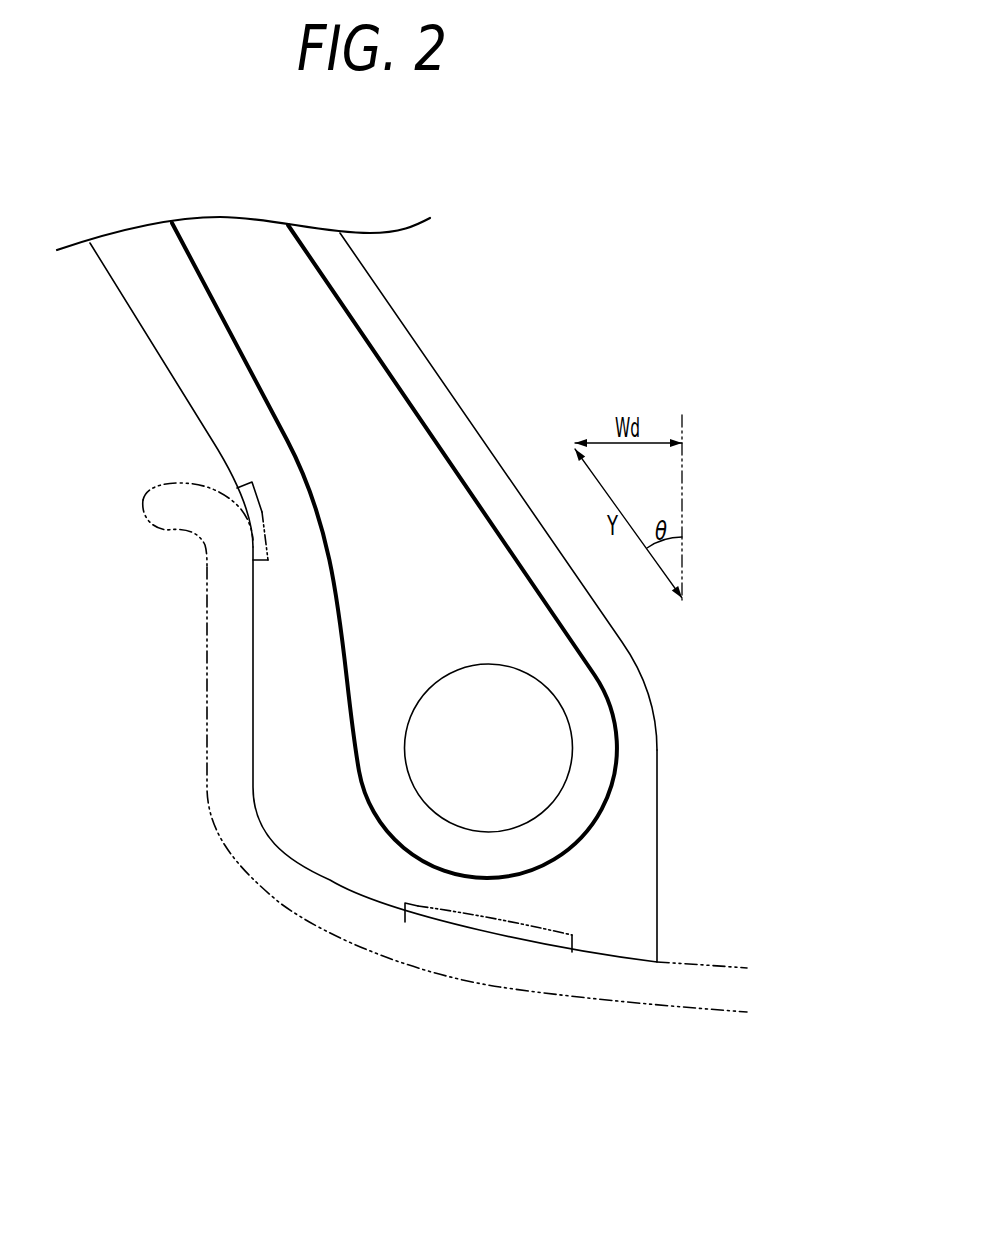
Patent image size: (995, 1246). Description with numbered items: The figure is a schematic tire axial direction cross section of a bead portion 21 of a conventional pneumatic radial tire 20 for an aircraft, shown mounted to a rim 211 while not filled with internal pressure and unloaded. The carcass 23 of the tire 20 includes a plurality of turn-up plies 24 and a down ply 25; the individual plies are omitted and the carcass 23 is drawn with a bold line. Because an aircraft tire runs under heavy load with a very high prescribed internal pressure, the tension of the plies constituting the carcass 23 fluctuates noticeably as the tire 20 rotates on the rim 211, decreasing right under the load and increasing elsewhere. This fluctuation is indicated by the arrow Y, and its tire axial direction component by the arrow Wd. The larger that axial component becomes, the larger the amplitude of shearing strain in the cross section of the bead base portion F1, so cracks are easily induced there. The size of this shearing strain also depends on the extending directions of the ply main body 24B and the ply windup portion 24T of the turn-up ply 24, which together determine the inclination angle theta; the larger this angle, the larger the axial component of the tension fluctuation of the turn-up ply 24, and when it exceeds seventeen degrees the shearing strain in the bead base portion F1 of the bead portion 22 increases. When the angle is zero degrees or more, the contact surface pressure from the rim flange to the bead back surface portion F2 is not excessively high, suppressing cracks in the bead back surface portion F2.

The pneumatic radial tire 20 is at (606, 292).
The bead portion 21 is at (584, 366).
The bead portion 22 is at (543, 747).
The carcass 23 is at (419, 311).
The turn-up ply 24 is at (332, 550).
The ply windup portion 24T is at (260, 390).
The ply main body 24B is at (398, 392).
The down ply 25 is at (227, 330).
The rim 211 is at (163, 507).
The bead base portion F1 is at (491, 928).
The bead back surface portion F2 is at (268, 529).